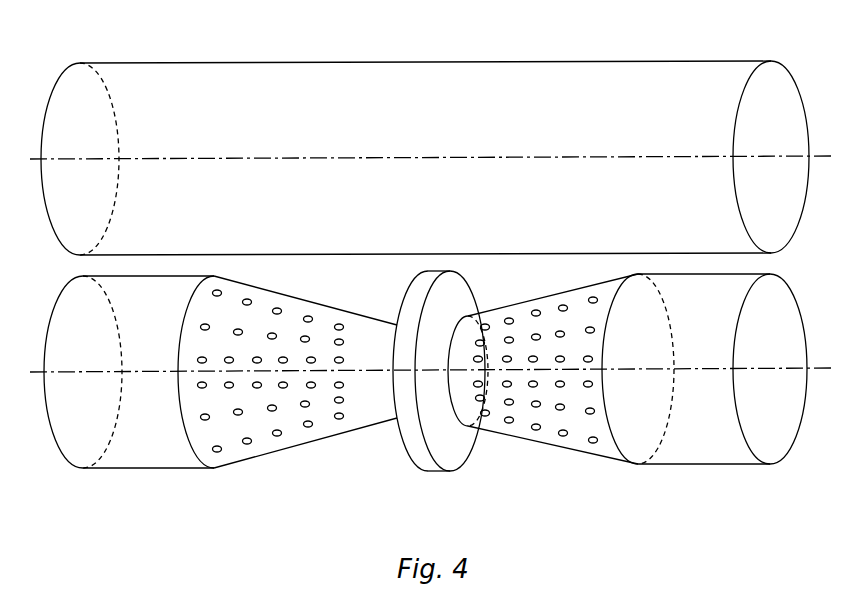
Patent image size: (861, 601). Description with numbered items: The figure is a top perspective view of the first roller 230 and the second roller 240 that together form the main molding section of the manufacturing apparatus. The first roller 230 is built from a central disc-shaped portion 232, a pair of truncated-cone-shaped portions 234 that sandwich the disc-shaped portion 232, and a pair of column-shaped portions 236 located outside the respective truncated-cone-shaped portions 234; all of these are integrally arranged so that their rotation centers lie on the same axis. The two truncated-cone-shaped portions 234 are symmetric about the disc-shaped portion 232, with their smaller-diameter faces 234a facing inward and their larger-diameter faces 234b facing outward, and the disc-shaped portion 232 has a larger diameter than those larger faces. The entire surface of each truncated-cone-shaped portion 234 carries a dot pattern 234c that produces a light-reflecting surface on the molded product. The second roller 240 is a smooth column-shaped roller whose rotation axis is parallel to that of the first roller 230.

The second roller 240 is at (722, 44).
The first roller 230 is at (432, 428).
The disc-shaped portion 232 is at (438, 472).
The truncated-cone-shaped portion 234 is at (297, 435).
The smaller-diameter face 234a is at (463, 393).
The larger-diameter face 234b is at (648, 352).
The dot pattern 234c is at (535, 430).
The column-shaped portion 236 is at (152, 455).